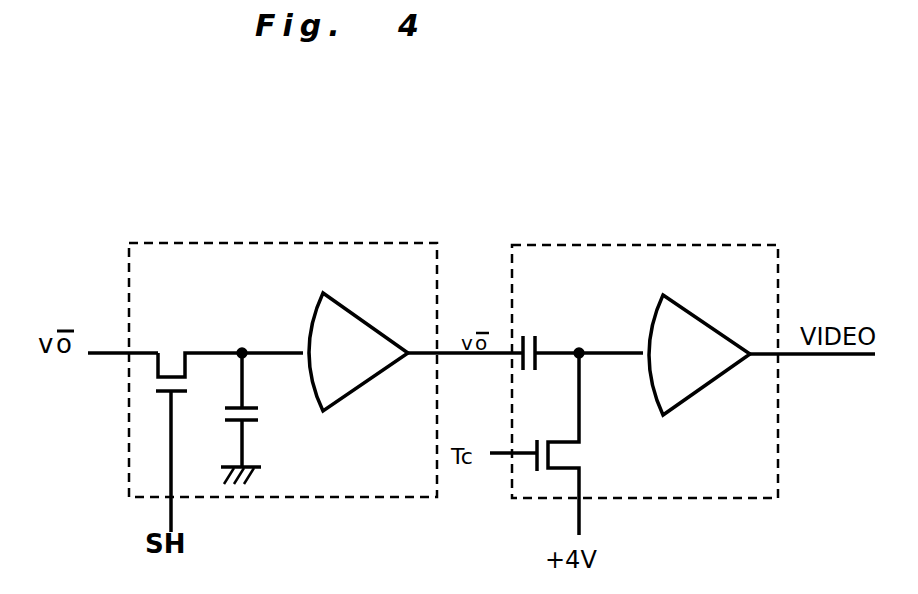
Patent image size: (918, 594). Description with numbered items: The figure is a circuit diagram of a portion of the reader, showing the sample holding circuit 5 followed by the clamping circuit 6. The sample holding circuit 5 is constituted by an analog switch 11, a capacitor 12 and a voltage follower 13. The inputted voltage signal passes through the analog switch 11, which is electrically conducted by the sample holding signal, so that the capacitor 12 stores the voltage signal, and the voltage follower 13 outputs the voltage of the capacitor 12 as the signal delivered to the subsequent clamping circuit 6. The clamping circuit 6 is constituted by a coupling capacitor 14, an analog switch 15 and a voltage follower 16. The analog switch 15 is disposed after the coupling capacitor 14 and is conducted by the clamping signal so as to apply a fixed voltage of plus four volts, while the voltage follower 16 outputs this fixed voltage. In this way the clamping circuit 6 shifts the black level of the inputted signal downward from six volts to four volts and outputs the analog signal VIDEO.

The sample holding circuit 5 is at (218, 243).
The clamping circuit 6 is at (664, 245).
The analog switch 11 is at (160, 372).
The capacitor 12 is at (261, 417).
The voltage follower 13 is at (377, 328).
The coupling capacitor 14 is at (530, 341).
The analog switch 15 is at (541, 477).
The voltage follower 16 is at (712, 328).